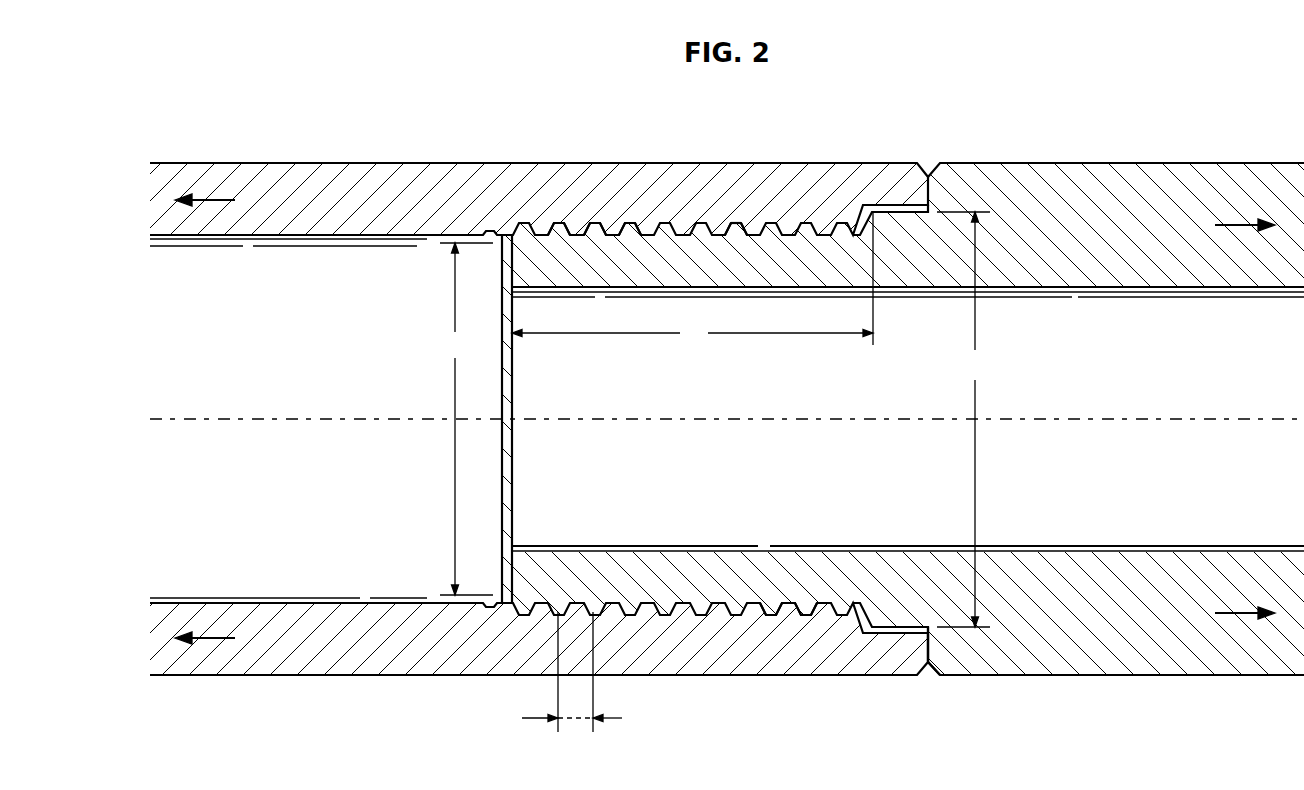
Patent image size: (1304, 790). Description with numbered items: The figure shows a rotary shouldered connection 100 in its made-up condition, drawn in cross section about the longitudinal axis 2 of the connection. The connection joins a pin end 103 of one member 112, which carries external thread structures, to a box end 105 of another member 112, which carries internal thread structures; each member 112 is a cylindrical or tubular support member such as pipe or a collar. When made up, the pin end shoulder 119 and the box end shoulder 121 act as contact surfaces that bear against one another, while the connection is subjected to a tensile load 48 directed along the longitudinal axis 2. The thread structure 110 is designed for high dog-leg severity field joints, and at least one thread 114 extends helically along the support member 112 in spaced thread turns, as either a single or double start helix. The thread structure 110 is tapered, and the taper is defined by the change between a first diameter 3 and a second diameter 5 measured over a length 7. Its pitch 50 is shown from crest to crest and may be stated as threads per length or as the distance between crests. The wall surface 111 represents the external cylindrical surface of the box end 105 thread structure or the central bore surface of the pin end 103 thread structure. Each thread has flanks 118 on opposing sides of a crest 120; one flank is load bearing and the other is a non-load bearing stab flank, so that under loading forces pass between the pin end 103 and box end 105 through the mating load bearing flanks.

The rotary shouldered connection 100 is at (372, 103).
The longitudinal axis 2 is at (248, 418).
The first diameter 3 is at (466, 419).
The second diameter 5 is at (963, 419).
The length 7 is at (692, 279).
The tensile load 48 is at (215, 641).
The pitch 50 is at (555, 673).
The pin end 103 is at (681, 270).
The box end 105 is at (720, 657).
The thread structure 110 is at (625, 218).
The wall surface 111 is at (466, 163).
The member 112 is at (727, 426).
The thread 114 is at (562, 229).
The flanks 118 is at (722, 218).
The pin end shoulder 119 is at (935, 654).
The crest 120 is at (736, 214).
The box end shoulder 121 is at (920, 646).